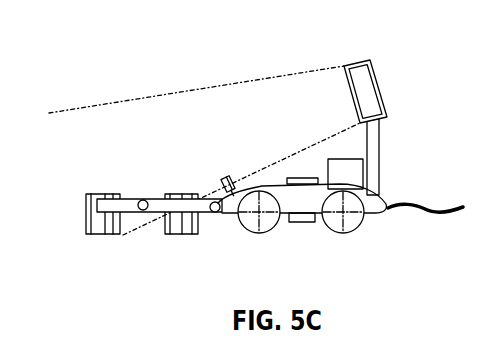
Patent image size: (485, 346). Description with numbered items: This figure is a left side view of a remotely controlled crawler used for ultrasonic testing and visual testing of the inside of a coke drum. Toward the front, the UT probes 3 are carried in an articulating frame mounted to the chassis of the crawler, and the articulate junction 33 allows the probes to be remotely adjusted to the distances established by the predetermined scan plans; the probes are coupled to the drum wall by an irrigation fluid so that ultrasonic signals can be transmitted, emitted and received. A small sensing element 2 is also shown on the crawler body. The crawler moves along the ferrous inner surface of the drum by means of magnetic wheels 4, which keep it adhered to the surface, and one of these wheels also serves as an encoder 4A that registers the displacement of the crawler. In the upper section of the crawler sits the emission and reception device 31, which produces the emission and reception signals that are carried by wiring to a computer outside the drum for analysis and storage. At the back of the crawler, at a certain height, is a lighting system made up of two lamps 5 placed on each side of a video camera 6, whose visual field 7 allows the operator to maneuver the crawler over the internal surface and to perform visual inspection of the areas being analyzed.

The sensor 2 is at (237, 176).
The UT probes 3 is at (108, 238).
The articulate junction 33 is at (148, 200).
The magnetic wheels 4 is at (245, 233).
The encoder 4A is at (335, 233).
The lamps 5 is at (375, 78).
The video camera 6 is at (355, 54).
The visual field 7 is at (237, 79).
The emission and reception device 31 is at (363, 172).